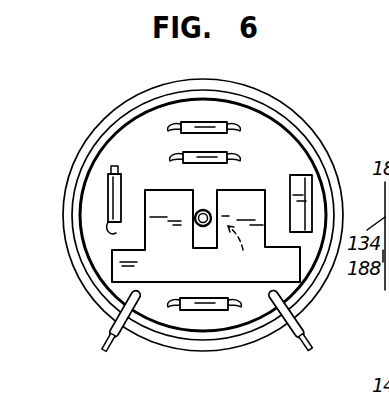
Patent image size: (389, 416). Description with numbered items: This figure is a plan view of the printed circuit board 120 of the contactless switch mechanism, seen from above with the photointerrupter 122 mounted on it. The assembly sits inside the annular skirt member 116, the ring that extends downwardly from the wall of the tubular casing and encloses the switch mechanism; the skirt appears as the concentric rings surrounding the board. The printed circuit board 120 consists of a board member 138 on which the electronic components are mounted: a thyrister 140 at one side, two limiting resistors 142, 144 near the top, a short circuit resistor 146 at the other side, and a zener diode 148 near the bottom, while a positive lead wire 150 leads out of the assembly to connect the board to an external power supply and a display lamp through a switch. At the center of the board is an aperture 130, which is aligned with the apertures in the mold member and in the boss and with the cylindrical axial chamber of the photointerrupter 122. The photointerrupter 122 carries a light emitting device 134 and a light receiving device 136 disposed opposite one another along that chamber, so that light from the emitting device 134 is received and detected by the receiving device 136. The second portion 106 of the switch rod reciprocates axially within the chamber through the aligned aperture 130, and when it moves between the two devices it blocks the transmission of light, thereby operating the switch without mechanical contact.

The second portion 106 is at (204, 228).
The annular skirt member 116 is at (170, 348).
The printed circuit board 120 is at (278, 139).
The photointerrupter 122 is at (298, 273).
The aperture 130 is at (206, 211).
The light emitting device 134 is at (302, 274).
The light receiving device 136 is at (182, 224).
The board member 138 is at (262, 124).
The thyrister 140 is at (314, 186).
The limiting resistor 142 is at (204, 128).
The limiting resistor 144 is at (186, 158).
The short circuit resistor 146 is at (110, 191).
The zener diode 148 is at (216, 311).
The positive lead wire 150 is at (307, 339).